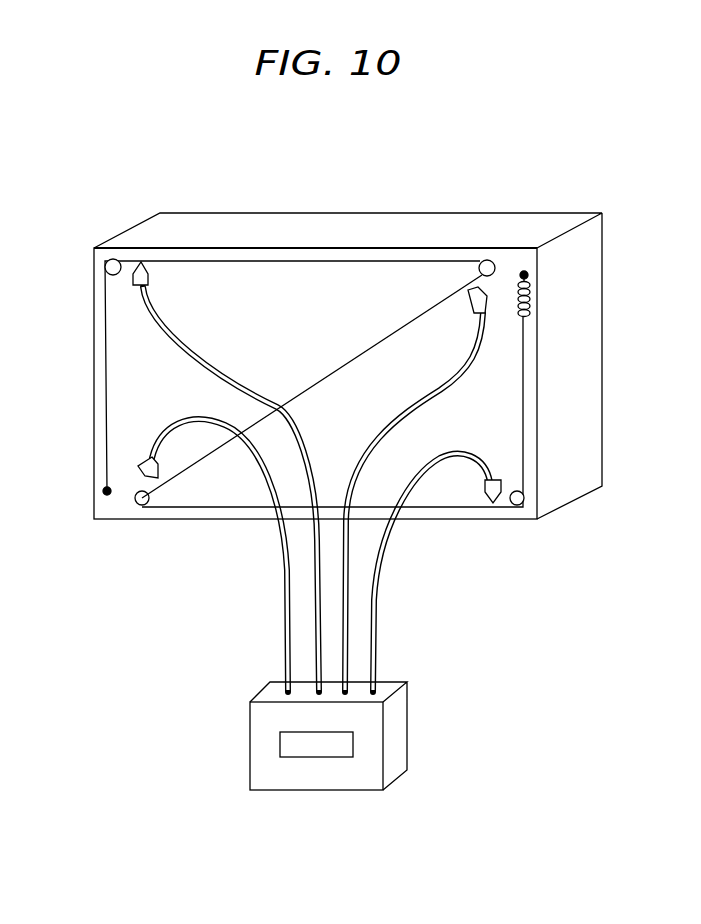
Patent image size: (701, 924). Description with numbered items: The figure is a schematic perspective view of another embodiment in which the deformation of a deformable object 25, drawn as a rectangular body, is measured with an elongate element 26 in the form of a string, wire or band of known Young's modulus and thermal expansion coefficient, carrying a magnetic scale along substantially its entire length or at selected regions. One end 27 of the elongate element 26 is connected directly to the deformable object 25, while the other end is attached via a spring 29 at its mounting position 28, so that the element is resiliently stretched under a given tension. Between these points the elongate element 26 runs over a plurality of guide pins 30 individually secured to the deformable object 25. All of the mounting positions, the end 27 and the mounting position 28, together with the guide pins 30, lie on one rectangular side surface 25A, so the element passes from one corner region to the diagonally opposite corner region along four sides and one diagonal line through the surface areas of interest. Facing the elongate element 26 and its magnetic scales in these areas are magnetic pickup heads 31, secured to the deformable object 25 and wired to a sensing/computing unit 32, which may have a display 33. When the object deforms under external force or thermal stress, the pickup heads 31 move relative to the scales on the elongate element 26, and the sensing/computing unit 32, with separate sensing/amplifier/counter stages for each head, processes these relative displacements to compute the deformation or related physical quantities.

The deformable object 25 is at (364, 229).
The rectangular side surface 25A is at (276, 338).
The elongate element 26 is at (257, 258).
The end 27 is at (103, 491).
The mounting position 28 is at (528, 275).
The spring 29 is at (533, 305).
The guide pins 30 is at (105, 267).
The magnetic pickup heads 31 is at (142, 264).
The sensing/computing unit 32 is at (367, 778).
The display 33 is at (280, 743).